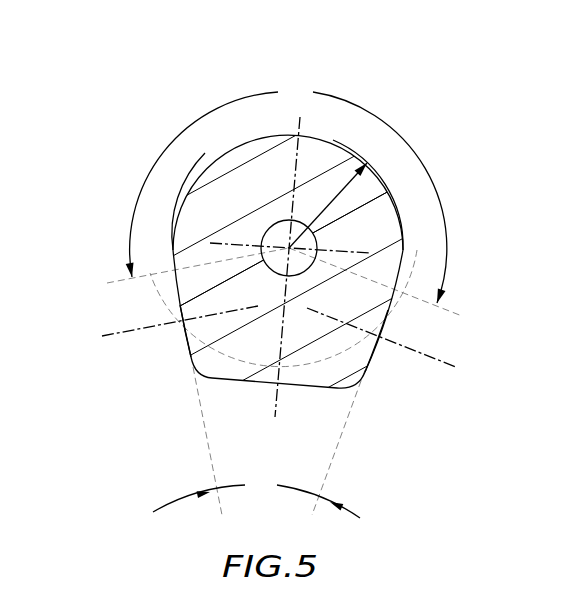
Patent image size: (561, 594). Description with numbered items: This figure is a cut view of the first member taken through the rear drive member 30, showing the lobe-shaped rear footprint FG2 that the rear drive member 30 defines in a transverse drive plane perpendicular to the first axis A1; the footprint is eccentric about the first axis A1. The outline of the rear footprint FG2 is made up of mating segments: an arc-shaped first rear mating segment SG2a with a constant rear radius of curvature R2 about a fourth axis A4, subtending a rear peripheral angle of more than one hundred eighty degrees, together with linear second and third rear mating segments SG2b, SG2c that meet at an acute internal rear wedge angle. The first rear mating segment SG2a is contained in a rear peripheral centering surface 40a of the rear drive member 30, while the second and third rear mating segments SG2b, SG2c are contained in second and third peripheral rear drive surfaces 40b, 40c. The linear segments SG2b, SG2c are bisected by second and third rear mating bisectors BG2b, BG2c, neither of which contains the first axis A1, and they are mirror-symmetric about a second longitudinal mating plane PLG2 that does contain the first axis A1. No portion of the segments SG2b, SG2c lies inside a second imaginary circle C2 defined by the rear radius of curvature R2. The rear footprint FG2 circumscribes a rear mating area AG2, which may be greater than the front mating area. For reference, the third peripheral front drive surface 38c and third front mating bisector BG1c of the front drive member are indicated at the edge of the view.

The rear drive member 30 is at (247, 205).
The rear peripheral centering surface 40a is at (263, 135).
The second peripheral rear drive surface 40b is at (187, 312).
The third peripheral rear drive surface 40c is at (385, 322).
The rear footprint FG2 is at (205, 153).
The first rear mating segment SG2a is at (333, 140).
The second rear mating segment SG2b is at (185, 338).
The third rear mating segment SG2c is at (378, 348).
The rear radius of curvature R2 is at (328, 205).
The rear mating area AG2 is at (380, 245).
The first axis A1 is at (270, 254).
The fourth axis A4 is at (290, 248).
The second longitudinal mating plane PLG2 is at (277, 285).
The second rear mating bisector BG2b is at (148, 329).
The third rear mating bisector BG2c is at (412, 348).
The second imaginary circle C2 is at (350, 347).
The third front mating bisector BG1c is at (535, 119).
The third peripheral front drive surface 38c is at (560, 164).